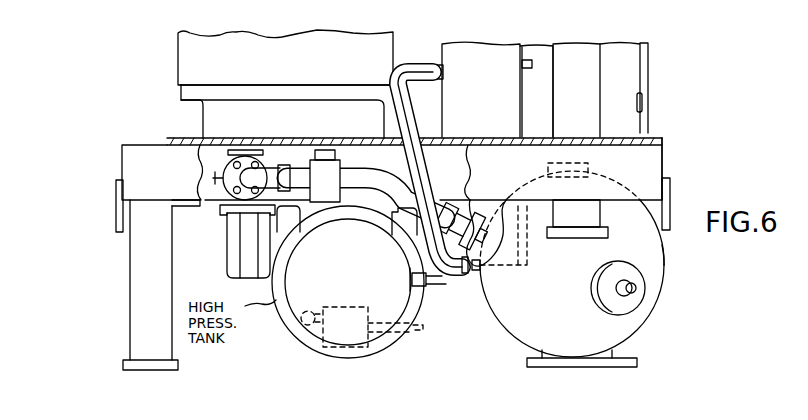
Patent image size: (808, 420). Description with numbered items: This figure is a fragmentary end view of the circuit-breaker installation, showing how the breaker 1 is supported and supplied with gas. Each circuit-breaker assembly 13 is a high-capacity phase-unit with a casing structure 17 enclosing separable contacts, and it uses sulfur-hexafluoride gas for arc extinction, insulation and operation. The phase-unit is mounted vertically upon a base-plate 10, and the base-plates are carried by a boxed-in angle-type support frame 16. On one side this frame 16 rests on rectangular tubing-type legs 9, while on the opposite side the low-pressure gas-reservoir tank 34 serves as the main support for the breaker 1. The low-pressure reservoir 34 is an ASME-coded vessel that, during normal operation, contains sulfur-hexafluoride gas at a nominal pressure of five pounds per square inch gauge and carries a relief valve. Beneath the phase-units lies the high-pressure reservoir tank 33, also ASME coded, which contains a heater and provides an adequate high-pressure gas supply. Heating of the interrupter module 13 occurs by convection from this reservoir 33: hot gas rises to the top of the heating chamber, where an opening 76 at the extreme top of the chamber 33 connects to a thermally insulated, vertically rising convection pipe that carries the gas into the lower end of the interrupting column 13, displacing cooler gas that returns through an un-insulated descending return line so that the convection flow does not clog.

The breaker 1 is at (686, 168).
The rectangular tubing-type legs 9 is at (131, 270).
The base-plate 10 is at (177, 136).
The circuit-breaker assembly 13 is at (161, 68).
The support frame 16 is at (131, 317).
The casing structure 17 is at (177, 33).
The high-pressure reservoir tank 33 is at (397, 333).
The low-pressure gas-reservoir tank 34 is at (665, 283).
The opening 76 is at (347, 210).